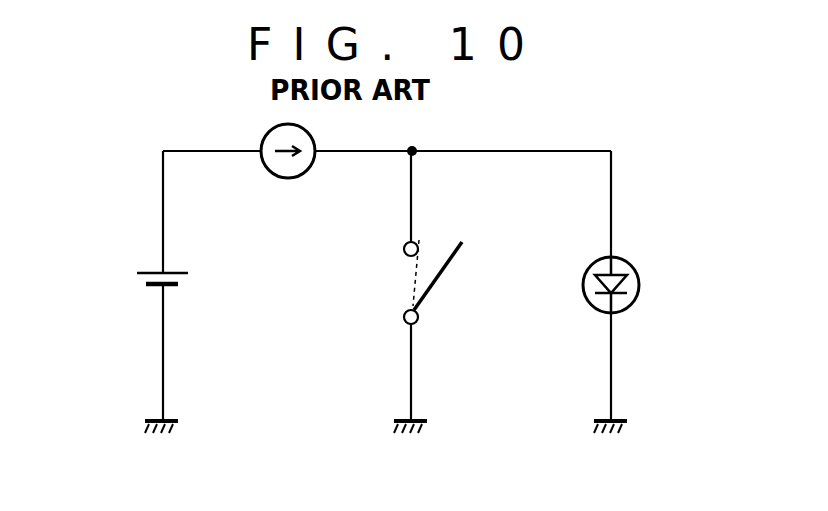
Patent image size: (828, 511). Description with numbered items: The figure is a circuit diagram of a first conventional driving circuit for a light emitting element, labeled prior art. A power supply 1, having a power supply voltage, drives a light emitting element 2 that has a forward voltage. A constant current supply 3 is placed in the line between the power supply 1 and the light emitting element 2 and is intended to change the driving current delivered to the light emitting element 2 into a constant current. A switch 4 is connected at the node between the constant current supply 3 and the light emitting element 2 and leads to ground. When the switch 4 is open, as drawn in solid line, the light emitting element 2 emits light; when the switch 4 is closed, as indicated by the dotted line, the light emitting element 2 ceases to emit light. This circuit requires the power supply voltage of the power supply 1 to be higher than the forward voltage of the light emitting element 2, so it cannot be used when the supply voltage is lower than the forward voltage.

The power supply 1 is at (135, 281).
The light emitting element 2 is at (584, 292).
The constant current supply 3 is at (311, 140).
The switch 4 is at (402, 278).